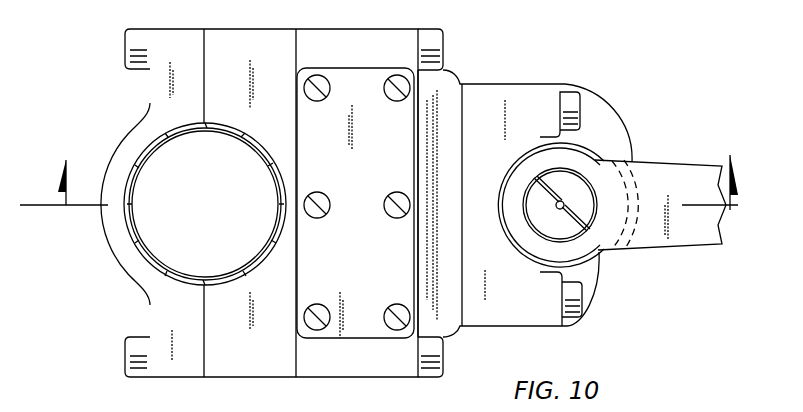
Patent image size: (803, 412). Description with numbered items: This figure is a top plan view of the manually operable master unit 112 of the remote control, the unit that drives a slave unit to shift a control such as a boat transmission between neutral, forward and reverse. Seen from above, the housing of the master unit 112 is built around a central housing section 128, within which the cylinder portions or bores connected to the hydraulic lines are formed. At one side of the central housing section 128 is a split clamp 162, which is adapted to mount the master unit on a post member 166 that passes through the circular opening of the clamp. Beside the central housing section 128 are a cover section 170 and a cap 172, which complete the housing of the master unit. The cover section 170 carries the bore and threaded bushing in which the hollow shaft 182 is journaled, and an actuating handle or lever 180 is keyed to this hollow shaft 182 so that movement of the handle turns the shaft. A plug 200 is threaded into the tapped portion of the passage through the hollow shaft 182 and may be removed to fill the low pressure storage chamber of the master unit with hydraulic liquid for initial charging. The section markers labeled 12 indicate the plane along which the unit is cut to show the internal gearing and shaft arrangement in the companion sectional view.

The master unit 112 is at (469, 49).
The central housing section 128 is at (324, 366).
The split clamp 162 is at (130, 270).
The post member 166 is at (170, 268).
The cover section 170 is at (603, 130).
The cap 172 is at (394, 184).
The actuating handle 180 is at (667, 245).
The hollow shaft 182 is at (578, 243).
The plug 200 is at (552, 232).
The section line 12- 12 is at (379, 195).